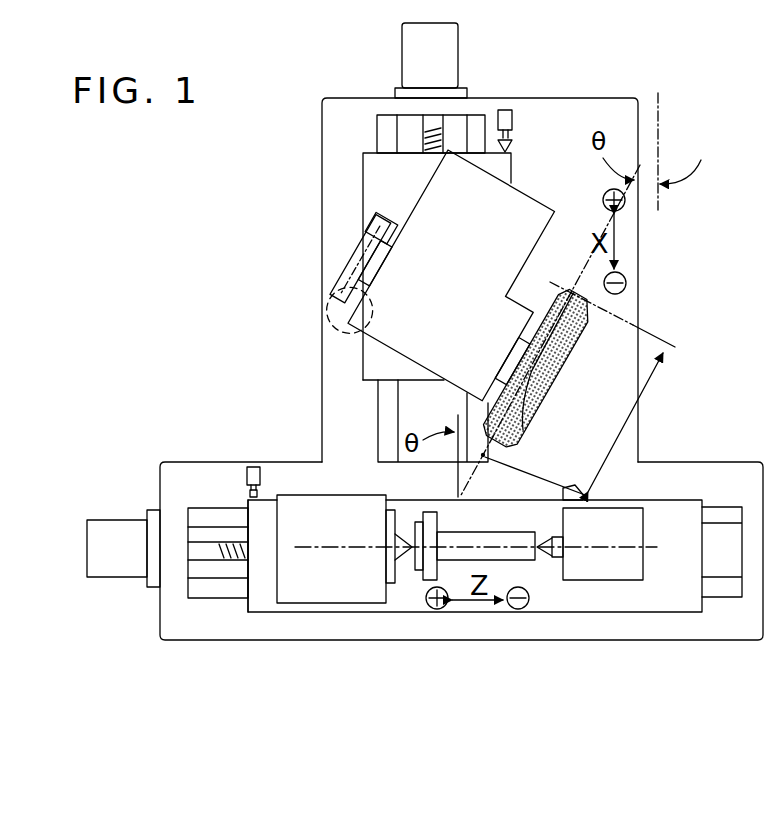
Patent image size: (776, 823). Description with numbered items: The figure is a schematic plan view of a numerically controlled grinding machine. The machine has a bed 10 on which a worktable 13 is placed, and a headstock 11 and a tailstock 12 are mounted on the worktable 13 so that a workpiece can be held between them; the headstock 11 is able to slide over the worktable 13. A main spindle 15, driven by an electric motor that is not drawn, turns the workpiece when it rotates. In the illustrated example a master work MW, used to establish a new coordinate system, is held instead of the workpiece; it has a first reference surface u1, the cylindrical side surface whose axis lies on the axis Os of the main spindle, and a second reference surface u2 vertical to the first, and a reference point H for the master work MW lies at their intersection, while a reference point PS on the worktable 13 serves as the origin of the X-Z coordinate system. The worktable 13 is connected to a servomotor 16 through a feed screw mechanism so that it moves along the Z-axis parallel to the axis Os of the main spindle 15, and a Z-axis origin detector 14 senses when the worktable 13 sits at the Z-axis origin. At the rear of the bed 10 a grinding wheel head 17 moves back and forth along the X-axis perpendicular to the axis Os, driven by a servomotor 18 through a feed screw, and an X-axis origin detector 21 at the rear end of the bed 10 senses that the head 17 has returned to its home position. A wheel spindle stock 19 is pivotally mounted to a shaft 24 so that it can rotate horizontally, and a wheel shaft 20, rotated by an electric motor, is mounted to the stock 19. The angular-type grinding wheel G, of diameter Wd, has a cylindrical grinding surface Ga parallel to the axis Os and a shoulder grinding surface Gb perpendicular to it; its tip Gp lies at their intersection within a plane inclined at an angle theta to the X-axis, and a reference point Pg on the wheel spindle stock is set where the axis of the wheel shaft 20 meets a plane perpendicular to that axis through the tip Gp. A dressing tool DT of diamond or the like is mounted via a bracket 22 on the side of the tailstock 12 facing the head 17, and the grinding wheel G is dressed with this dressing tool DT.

The bed 10 is at (632, 96).
The headstock 11 is at (337, 600).
The tailstock 12 is at (600, 580).
The worktable 13 is at (652, 612).
The Z-axis origin detector 14 is at (248, 462).
The main spindle 15 is at (415, 582).
The servomotor 16 is at (103, 572).
The grinding wheel head 17 is at (377, 177).
The servomotor 18 is at (402, 45).
The wheel spindle stock 19 is at (522, 198).
The wheel shaft 20 is at (507, 340).
The X-axis origin detector 21 is at (513, 118).
The bracket 22 is at (563, 500).
The shaft 24 is at (435, 315).
The grinding wheel G is at (577, 335).
The tip of the grinding wheel Gp is at (483, 458).
The cylindrical grinding surface Ga is at (510, 455).
The shoulder grinding surface Gb is at (478, 447).
The reference point on the wheel spindle stock Pg is at (564, 408).
The diameter of the grinding wheel Wd is at (574, 424).
The dressing tool DT is at (588, 493).
The master work MW is at (535, 562).
The reference point on the worktable PS is at (412, 580).
The axis of the main spindle Os is at (637, 540).
The first reference surface u1 is at (455, 518).
The second reference surface u2 is at (440, 490).
The reference point for the master work H is at (457, 515).